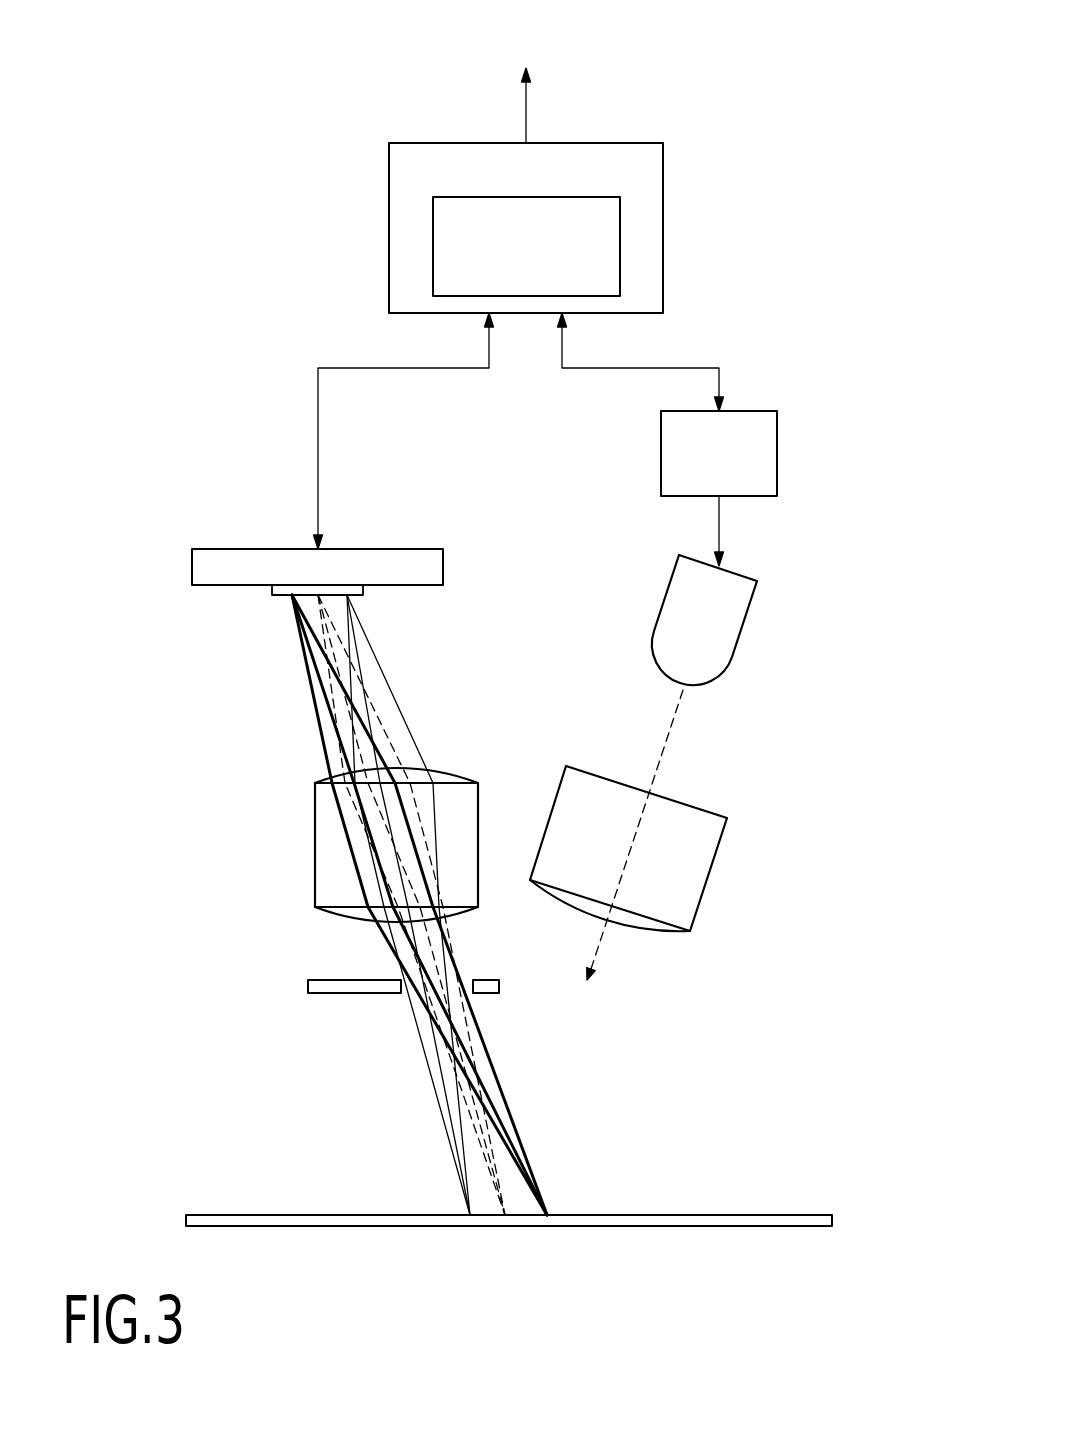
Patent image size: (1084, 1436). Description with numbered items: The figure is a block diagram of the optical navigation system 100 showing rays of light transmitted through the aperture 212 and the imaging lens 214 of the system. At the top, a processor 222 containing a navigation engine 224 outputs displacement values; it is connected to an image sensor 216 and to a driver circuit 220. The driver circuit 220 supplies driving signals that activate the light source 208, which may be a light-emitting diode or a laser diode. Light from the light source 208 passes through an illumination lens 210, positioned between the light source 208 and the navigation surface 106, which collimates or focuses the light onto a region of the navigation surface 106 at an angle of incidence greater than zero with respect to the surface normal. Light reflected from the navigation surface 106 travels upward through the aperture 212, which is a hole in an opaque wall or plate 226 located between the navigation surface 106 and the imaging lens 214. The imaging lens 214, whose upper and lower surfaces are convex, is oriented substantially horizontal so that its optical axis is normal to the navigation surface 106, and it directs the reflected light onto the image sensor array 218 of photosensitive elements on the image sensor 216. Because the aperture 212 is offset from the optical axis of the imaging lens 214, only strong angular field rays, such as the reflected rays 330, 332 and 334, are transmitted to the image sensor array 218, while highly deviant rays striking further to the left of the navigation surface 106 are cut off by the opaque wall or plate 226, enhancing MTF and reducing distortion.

The optical navigation system 100 is at (835, 45).
The navigation surface 106 is at (790, 1215).
The light source 208 is at (746, 617).
The illumination lens 210 is at (710, 875).
The aperture 212 is at (463, 983).
The imaging lens 214 is at (315, 820).
The image sensor 216 is at (248, 549).
The image sensor array 218 is at (277, 597).
The driver circuit 220 is at (777, 445).
The processor 222 is at (663, 170).
The navigation engine 224 is at (620, 265).
The opaque wall or plate 226 is at (325, 978).
The reflected ray 330 is at (465, 1206).
The reflected ray 332 is at (497, 1210).
The reflected ray 334 is at (548, 1208).